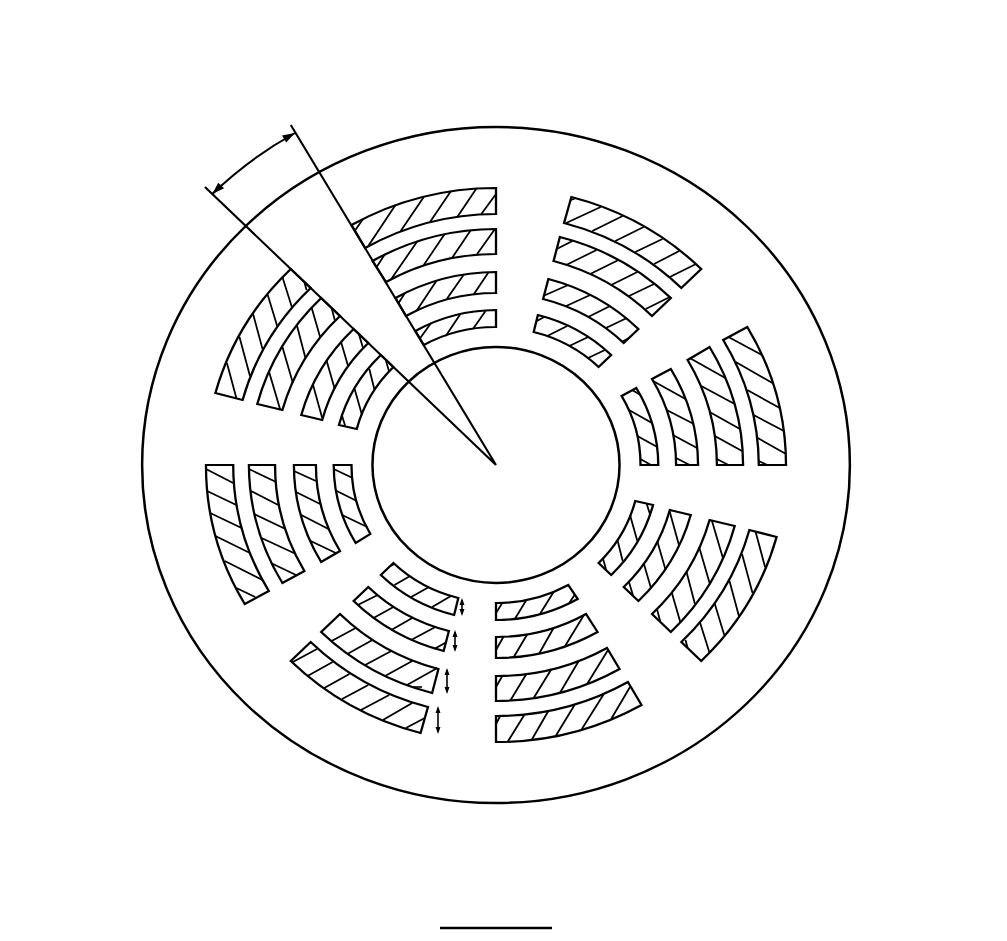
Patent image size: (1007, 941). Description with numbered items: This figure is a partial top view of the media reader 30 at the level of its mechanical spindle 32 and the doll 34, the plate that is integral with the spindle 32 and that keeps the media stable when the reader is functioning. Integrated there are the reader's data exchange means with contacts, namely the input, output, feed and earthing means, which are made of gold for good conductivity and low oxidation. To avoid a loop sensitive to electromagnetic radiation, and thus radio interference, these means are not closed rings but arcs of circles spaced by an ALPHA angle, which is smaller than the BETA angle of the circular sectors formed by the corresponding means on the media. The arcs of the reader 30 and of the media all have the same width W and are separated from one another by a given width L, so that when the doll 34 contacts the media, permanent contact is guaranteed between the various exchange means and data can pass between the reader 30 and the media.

The media reader 30 is at (497, 124).
The mechanical spindle 32 is at (572, 442).
The doll 34 is at (803, 350).
The ALPHA angle ALPHA is at (337, 295).
The width W is at (465, 669).
The width L is at (417, 698).